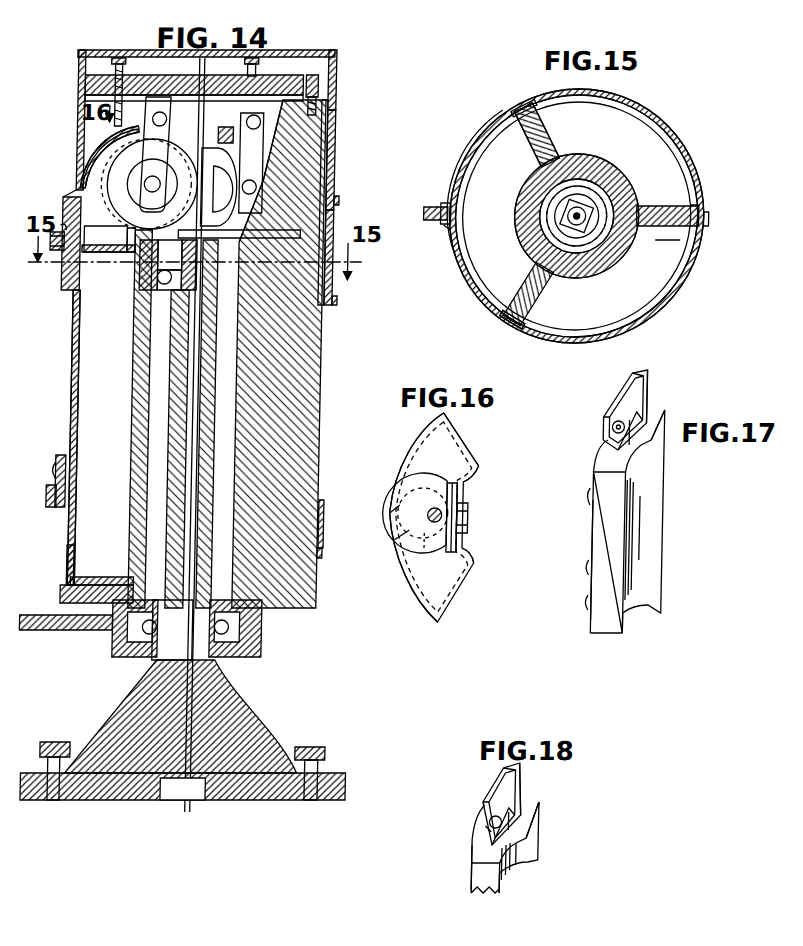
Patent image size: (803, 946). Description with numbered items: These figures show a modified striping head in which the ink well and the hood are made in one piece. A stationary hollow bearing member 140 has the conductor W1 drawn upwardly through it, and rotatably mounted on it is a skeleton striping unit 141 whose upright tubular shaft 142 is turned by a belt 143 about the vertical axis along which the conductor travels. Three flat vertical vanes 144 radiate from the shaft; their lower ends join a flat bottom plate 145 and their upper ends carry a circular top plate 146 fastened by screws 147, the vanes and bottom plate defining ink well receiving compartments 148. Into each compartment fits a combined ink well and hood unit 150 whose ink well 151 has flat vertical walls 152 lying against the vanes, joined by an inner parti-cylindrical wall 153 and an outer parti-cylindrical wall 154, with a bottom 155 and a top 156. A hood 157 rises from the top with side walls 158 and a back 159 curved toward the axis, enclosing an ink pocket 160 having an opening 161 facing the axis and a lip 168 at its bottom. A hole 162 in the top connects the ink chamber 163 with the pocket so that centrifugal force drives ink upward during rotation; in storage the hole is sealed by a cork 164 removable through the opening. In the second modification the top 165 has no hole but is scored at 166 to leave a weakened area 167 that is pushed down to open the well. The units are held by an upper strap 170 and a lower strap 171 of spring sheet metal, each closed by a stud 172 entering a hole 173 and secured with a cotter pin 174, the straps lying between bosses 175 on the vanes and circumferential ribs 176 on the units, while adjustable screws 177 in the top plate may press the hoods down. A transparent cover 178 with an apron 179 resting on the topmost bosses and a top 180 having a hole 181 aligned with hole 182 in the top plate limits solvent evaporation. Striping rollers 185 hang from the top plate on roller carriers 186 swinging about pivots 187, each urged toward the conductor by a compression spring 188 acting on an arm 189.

In FIG. 14, the bearing member 140 is at (224, 710).
In FIG. 15, the bearing member 140 is at (574, 228).
In FIG. 14, the skeleton striping unit 141 is at (316, 372).
In FIG. 15, the skeleton striping unit 141 is at (622, 262).
In FIG. 14, the upright tubular shaft 142 is at (141, 463).
In FIG. 15, the upright tubular shaft 142 is at (616, 192).
In FIG. 14, the belt 143 is at (52, 632).
In FIG. 14, the flat vertical vanes 144 is at (314, 418).
In FIG. 15, the flat vertical vanes 144 is at (520, 303).
In FIG. 14, the bottom plate 145 is at (67, 594).
In FIG. 14, the top plate 146 is at (322, 90).
In FIG. 14, the screws 147 is at (331, 74).
In FIG. 14, the ink well receiving compartments 148 is at (70, 571).
In FIG. 15, the ink well receiving compartments 148 is at (482, 310).
In FIG. 14, the combined ink well and hood unit 150 is at (74, 410).
In FIG. 15, the combined ink well and hood unit 150 is at (690, 207).
In FIG. 16, the combined ink well and hood unit 150 is at (454, 587).
In FIG. 17, the combined ink well and hood unit 150 is at (598, 628).
In FIG. 18, the combined ink well and hood unit 150 is at (480, 882).
In FIG. 14, the ink well 151 is at (74, 356).
In FIG. 15, the ink well 151 is at (692, 262).
In FIG. 16, the vertical walls 152 is at (483, 441).
In FIG. 17, the vertical walls 152 is at (628, 617).
In FIG. 18, the vertical walls 152 is at (506, 890).
In FIG. 14, the inner parti-cylindrical wall 153 is at (134, 376).
In FIG. 15, the inner parti-cylindrical wall 153 is at (540, 165).
In FIG. 16, the inner parti-cylindrical wall 153 is at (476, 478).
In FIG. 17, the inner parti-cylindrical wall 153 is at (650, 513).
In FIG. 18, the inner parti-cylindrical wall 153 is at (523, 858).
In FIG. 14, the outer parti-cylindrical wall 154 is at (74, 333).
In FIG. 15, the outer parti-cylindrical wall 154 is at (456, 254).
In FIG. 16, the outer parti-cylindrical wall 154 is at (427, 446).
In FIG. 17, the outer parti-cylindrical wall 154 is at (597, 538).
In FIG. 18, the outer parti-cylindrical wall 154 is at (470, 868).
In FIG. 14, the bottom 155 is at (94, 580).
In FIG. 15, the bottom 155 is at (660, 286).
In FIG. 17, the bottom 155 is at (610, 636).
In FIG. 16, the top 156 is at (453, 437).
In FIG. 17, the top 156 is at (656, 431).
In FIG. 14, the hood 157 is at (108, 140).
In FIG. 16, the hood 157 is at (414, 538).
In FIG. 17, the hood 157 is at (651, 373).
In FIG. 18, the hood 157 is at (523, 768).
In FIG. 14, the side walls 158 is at (100, 152).
In FIG. 16, the side walls 158 is at (445, 471).
In FIG. 17, the side walls 158 is at (650, 393).
In FIG. 18, the side walls 158 is at (526, 787).
In FIG. 14, the back 159 is at (90, 166).
In FIG. 17, the back 159 is at (628, 397).
In FIG. 18, the back 159 is at (490, 788).
In FIG. 14, the ink pocket 160 is at (116, 140).
In FIG. 16, the ink pocket 160 is at (431, 550).
In FIG. 17, the ink pocket 160 is at (632, 412).
In FIG. 18, the ink pocket 160 is at (507, 808).
In FIG. 14, the opening 161 is at (127, 231).
In FIG. 17, the opening 161 is at (632, 373).
In FIG. 18, the opening 161 is at (502, 775).
In FIG. 14, the hole 162 is at (93, 252).
In FIG. 16, the hole 162 is at (398, 532).
In FIG. 14, the ink chamber 163 is at (92, 430).
In FIG. 15, the ink chamber 163 is at (674, 245).
In FIG. 17, the cork 164 is at (617, 432).
In FIG. 18, the top 165 is at (533, 812).
In FIG. 18, the scoring 166 is at (496, 828).
In FIG. 18, the weakened area 167 is at (500, 819).
In FIG. 14, the lip 168 is at (136, 252).
In FIG. 16, the lip 168 is at (463, 494).
In FIG. 17, the lip 168 is at (634, 428).
In FIG. 18, the lip 168 is at (521, 820).
In FIG. 14, the upper strap 170 is at (333, 222).
In FIG. 15, the upper strap 170 is at (672, 130).
In FIG. 14, the lower strap 171 is at (323, 548).
In FIG. 14, the stud 172 is at (56, 252).
In FIG. 15, the stud 172 is at (440, 207).
In FIG. 14, the hole 173 is at (60, 226).
In FIG. 15, the hole 173 is at (444, 227).
In FIG. 14, the cotter pin 174 is at (62, 250).
In FIG. 15, the cotter pin 174 is at (440, 200).
In FIG. 14, the bosses 175 is at (336, 198).
In FIG. 15, the bosses 175 is at (708, 215).
In FIG. 14, the circumferential ribs 176 is at (68, 548).
In FIG. 16, the circumferential ribs 176 is at (415, 597).
In FIG. 17, the circumferential ribs 176 is at (596, 613).
In FIG. 14, the screws 177 is at (75, 57).
In FIG. 16, the screws 177 is at (446, 516).
In FIG. 14, the cover 178 is at (333, 128).
In FIG. 14, the apron 179 is at (333, 150).
In FIG. 14, the top 180 is at (118, 52).
In FIG. 14, the hole 181 is at (200, 53).
In FIG. 14, the hole 182 is at (244, 60).
In FIG. 14, the striping rollers 185 is at (120, 166).
In FIG. 16, the striping rollers 185 is at (474, 518).
In FIG. 14, the roller carriers 186 is at (122, 176).
In FIG. 14, the pivots 187 is at (154, 175).
In FIG. 14, the compression spring 188 is at (160, 113).
In FIG. 14, the arm 189 is at (180, 124).
In FIG. 14, the conductor W1 is at (186, 804).